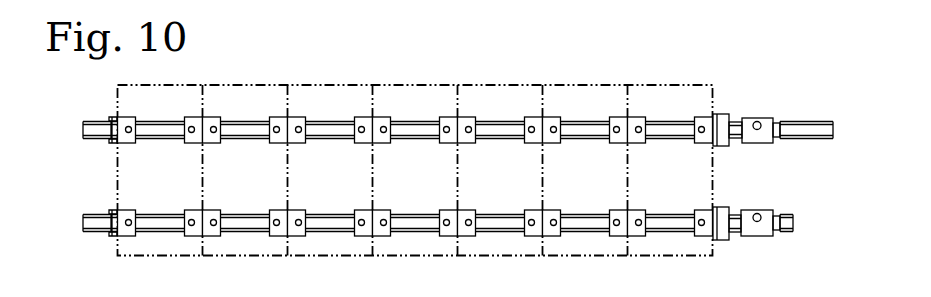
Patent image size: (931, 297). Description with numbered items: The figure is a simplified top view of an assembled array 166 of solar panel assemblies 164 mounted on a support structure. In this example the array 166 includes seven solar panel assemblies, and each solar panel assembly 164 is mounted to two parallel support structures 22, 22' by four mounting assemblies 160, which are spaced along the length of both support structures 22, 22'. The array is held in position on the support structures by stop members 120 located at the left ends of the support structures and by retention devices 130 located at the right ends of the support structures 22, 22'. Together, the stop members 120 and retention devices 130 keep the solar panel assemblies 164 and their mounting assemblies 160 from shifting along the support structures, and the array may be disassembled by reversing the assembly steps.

The support structure 22 is at (810, 109).
The support structure 22' is at (798, 201).
The stop member 120 is at (114, 149).
The retention device 130 is at (739, 108).
The mounting assembly 160 is at (453, 117).
The solar panel assembly 164 is at (661, 84).
The array 166 is at (549, 57).